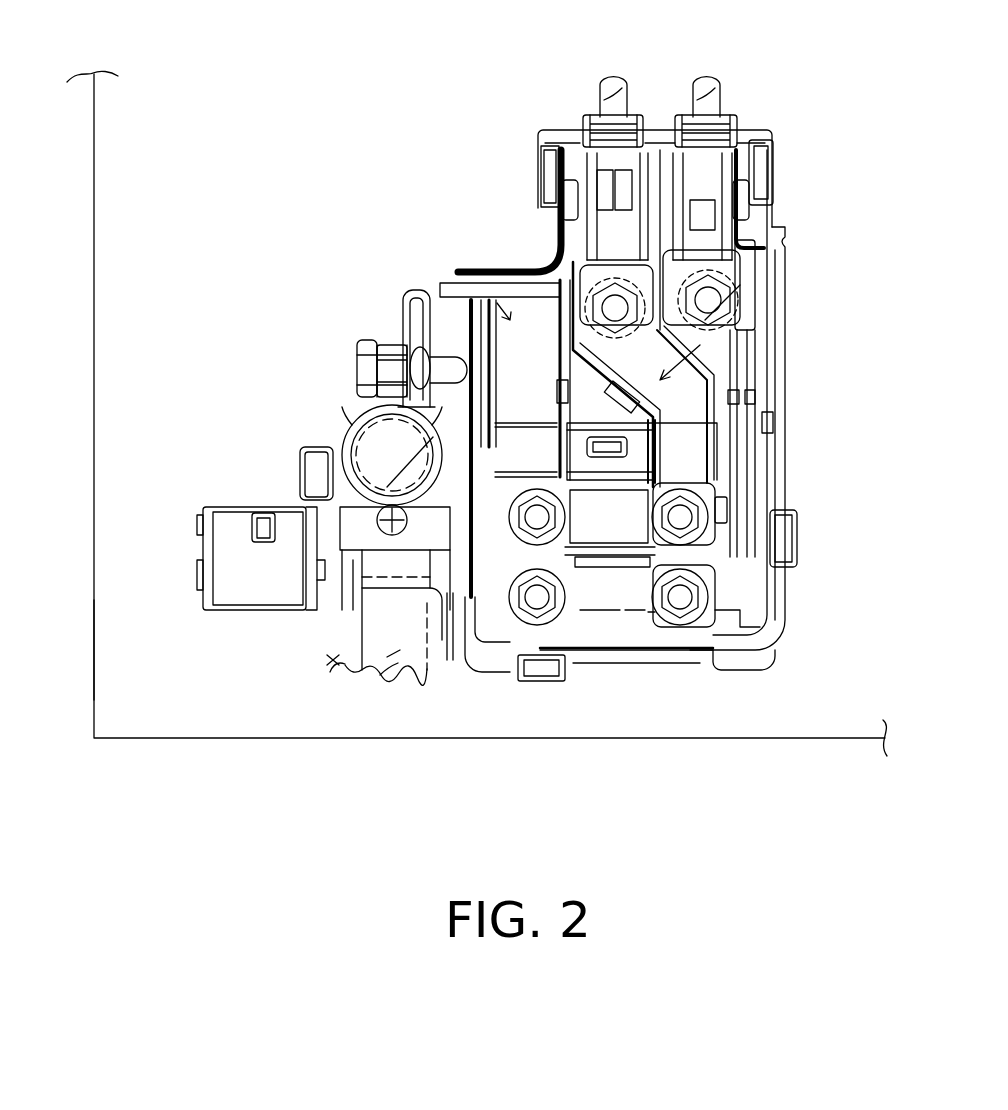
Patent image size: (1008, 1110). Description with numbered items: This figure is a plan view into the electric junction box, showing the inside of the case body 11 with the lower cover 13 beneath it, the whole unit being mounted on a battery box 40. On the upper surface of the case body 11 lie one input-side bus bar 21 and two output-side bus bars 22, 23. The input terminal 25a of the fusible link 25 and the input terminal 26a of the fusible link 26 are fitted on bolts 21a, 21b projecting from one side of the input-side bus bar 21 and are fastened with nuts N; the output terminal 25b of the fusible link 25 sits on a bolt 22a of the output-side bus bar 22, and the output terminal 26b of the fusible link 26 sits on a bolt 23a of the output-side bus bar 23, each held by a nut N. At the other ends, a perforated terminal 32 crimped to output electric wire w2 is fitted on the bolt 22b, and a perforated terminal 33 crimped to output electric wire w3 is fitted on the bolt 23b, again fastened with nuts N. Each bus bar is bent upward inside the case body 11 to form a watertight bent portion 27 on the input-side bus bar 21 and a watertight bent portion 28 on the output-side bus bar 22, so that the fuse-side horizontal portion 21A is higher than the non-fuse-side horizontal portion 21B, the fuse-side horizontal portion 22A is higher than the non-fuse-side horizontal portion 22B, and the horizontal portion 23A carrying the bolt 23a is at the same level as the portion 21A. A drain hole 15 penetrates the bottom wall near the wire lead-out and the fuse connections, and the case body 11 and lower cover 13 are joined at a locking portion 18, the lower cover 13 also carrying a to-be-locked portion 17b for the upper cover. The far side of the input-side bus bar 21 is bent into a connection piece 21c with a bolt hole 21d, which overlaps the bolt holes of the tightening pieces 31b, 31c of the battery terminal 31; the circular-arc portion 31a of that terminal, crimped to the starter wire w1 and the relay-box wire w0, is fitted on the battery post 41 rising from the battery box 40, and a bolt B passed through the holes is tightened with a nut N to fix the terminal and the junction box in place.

The bolt B is at (440, 430).
The battery box 40 is at (128, 603).
The case body 11 is at (784, 246).
The lower cover 13 is at (782, 222).
The drain hole 15 is at (587, 157).
The to-be-locked portion 17b is at (550, 157).
The locking portion 18 is at (560, 193).
The input-side bus bar 21 is at (435, 280).
The horizontal portion 21A is at (448, 603).
The horizontal portion 21B is at (457, 268).
The bolt 21a is at (535, 535).
The bolt 21b is at (540, 625).
The connection piece 21c is at (398, 327).
The bolt hole 21d is at (372, 352).
The output-side bus bar 22 is at (720, 360).
The horizontal portion 22A is at (698, 475).
The horizontal portion 22B is at (703, 390).
The bolt 22a is at (680, 517).
The bolt 22b is at (540, 280).
The output-side bus bar 23 is at (745, 335).
The horizontal portion 23A is at (745, 590).
The bolt 23a is at (765, 625).
The bolt 23b is at (750, 290).
The fusible link 25 is at (678, 475).
The input terminal 25a is at (630, 613).
The output terminal 25b is at (733, 495).
The fusible link 26 is at (650, 620).
The input terminal 26a is at (585, 617).
The output terminal 26b is at (700, 652).
The watertight bent portion 27 is at (475, 340).
The watertight bent portion 28 is at (693, 433).
The battery terminal 31 is at (345, 417).
The circular-arc portion 31a is at (352, 440).
The tightening piece 31b is at (372, 372).
The tightening piece 31c is at (385, 386).
The perforated terminal 32 is at (555, 252).
The perforated terminal 33 is at (772, 225).
The battery post 41 is at (300, 462).
The nut N is at (570, 320).
The electric wire w0 is at (347, 615).
The electric wire w1 is at (375, 667).
The output electric wire w2 is at (613, 97).
The output electric wire w3 is at (707, 97).